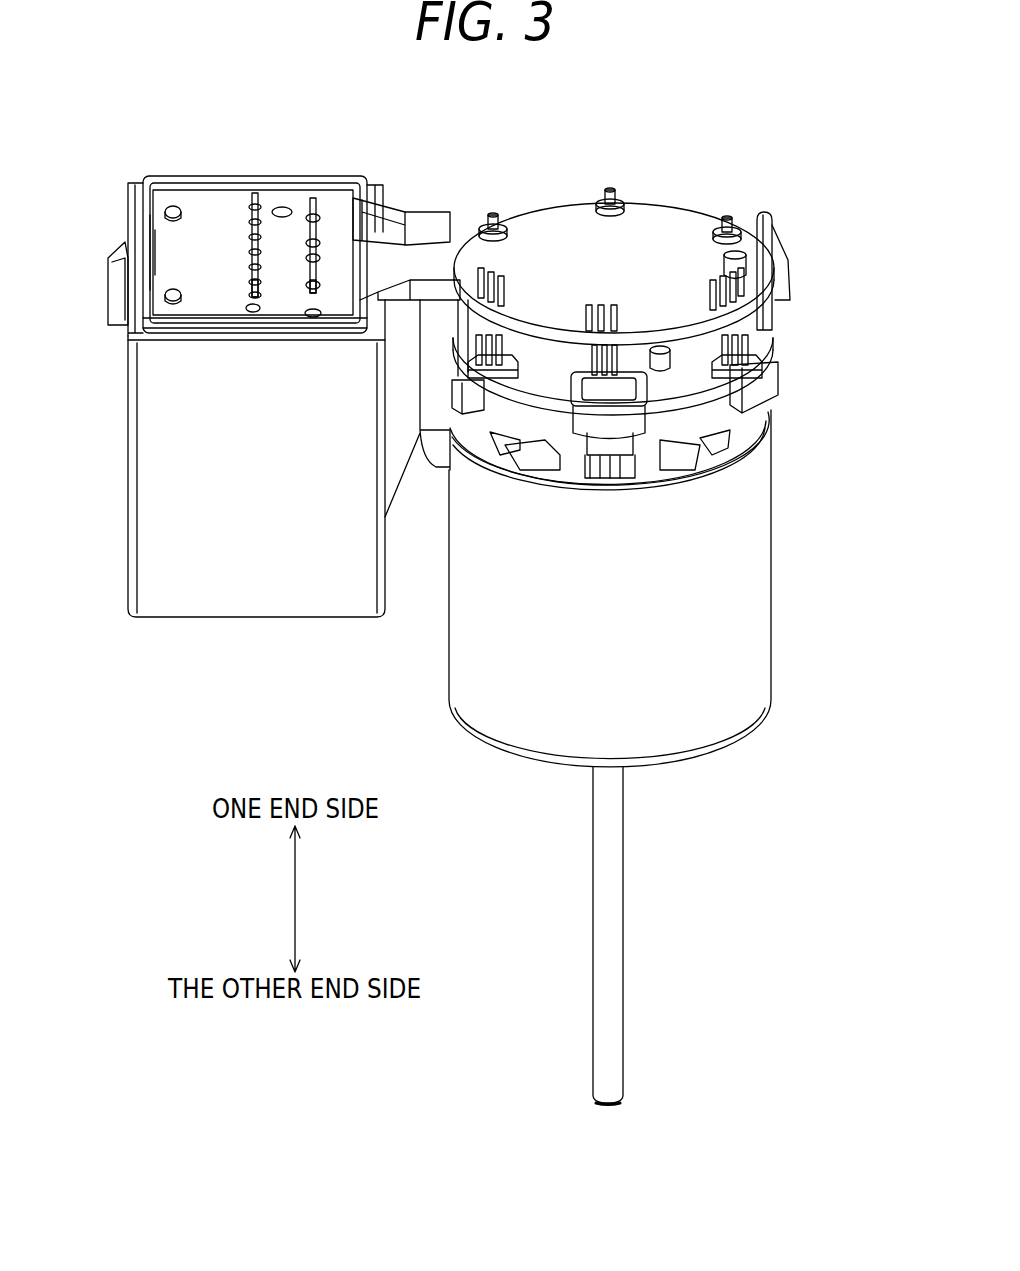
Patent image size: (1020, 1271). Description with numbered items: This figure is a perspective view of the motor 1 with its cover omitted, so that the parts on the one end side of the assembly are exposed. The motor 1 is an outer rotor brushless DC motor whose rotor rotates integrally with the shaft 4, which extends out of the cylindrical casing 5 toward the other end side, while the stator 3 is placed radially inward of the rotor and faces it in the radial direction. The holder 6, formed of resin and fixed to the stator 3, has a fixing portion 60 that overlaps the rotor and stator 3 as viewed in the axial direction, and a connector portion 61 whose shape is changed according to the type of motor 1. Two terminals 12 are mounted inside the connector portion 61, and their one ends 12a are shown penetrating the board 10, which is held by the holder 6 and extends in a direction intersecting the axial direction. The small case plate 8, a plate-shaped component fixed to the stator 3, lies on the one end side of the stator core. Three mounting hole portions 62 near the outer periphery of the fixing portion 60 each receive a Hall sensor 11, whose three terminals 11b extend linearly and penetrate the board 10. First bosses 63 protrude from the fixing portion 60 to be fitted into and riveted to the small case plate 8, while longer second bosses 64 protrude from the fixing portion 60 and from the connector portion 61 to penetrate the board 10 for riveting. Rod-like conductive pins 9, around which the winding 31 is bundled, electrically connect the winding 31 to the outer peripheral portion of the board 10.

The motor 1 is at (122, 146).
The stator 3 is at (760, 456).
The shaft 4 is at (612, 997).
The casing 5 is at (774, 552).
The holder 6 is at (792, 372).
The small case plate 8 is at (528, 392).
The connecting means (pins) 9 is at (493, 214).
The board 10 is at (678, 197).
The Hall sensor 11 is at (482, 268).
The terminals 11b is at (505, 285).
The terminals 12 is at (244, 212).
The one end 12a is at (312, 293).
The winding 31 is at (548, 455).
The fixing portion 60 is at (736, 418).
The connector portion 61 is at (148, 463).
The mounting hole portion 62 is at (463, 416).
The first boss 63 is at (662, 372).
The second boss 64 is at (172, 206).